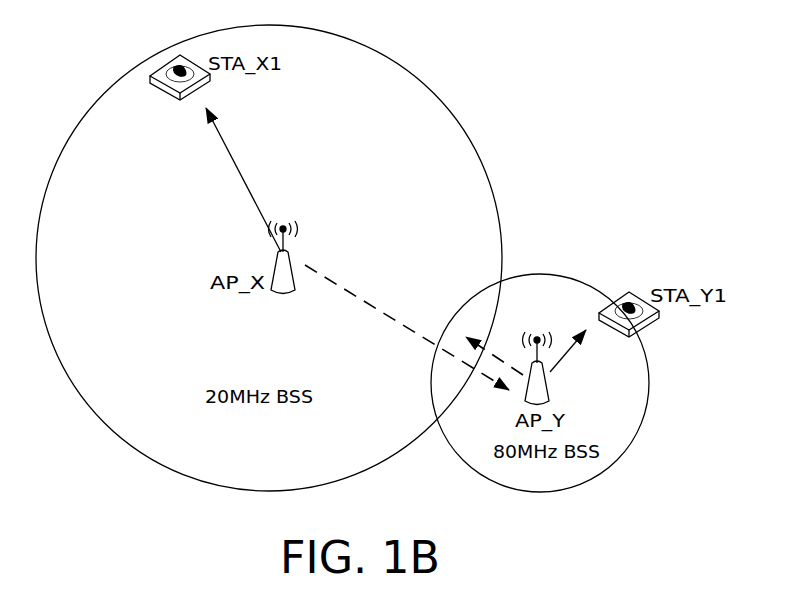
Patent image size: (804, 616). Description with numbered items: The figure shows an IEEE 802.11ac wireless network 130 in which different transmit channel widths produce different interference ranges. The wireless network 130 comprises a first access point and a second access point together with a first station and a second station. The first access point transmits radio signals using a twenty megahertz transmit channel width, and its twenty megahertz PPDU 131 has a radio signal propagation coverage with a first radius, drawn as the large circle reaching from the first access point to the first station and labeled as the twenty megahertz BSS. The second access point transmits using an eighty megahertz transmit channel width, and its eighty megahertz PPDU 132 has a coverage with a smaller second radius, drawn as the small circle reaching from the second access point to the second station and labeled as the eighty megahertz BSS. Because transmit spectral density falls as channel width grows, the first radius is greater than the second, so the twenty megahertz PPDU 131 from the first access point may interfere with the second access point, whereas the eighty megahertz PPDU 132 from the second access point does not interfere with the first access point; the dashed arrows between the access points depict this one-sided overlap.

The wireless network 130 is at (759, 66).
The 20 MHz PPDU 131 is at (232, 164).
The 80 MHz PPDU 132 is at (566, 345).